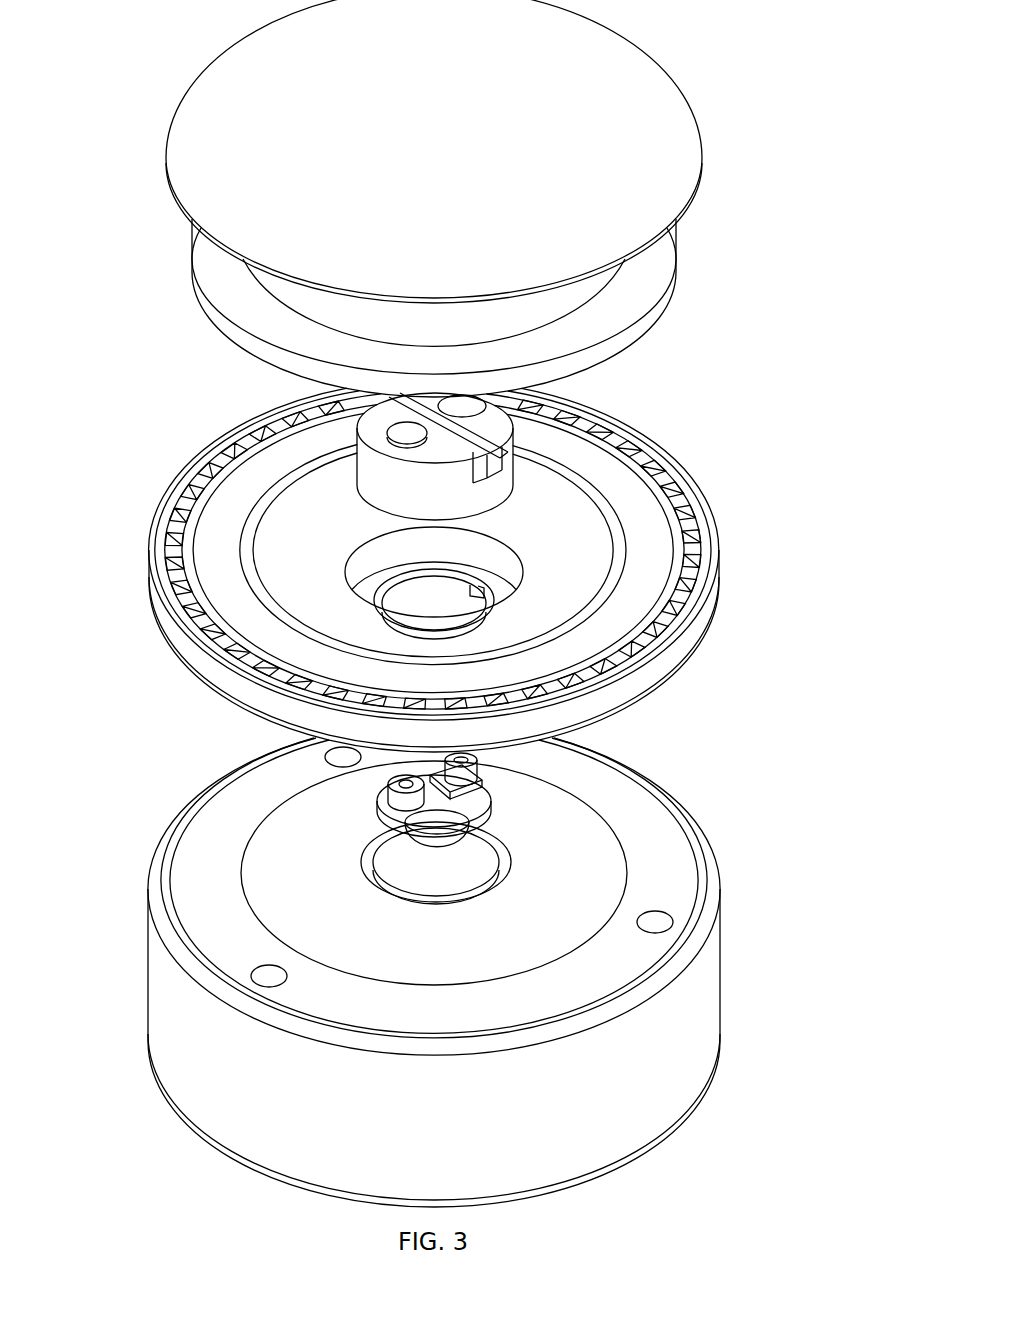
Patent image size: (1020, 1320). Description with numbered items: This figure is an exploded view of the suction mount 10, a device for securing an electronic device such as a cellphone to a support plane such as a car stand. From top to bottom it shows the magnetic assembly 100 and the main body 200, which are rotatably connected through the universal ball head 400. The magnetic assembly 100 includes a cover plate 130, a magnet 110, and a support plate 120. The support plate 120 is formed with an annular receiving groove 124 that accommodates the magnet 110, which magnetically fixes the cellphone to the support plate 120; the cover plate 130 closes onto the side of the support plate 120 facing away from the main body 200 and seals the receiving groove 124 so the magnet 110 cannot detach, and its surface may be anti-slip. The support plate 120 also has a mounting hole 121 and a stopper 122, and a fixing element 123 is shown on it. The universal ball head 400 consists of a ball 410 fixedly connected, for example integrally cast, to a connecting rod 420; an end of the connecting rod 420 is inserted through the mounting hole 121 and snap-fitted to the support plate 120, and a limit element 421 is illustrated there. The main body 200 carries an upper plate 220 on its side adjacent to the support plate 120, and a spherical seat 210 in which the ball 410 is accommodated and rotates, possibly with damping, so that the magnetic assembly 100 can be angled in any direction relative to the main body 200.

The suction mount 10 is at (106, 211).
The magnetic assembly 100 is at (736, 389).
The magnet 110 is at (653, 290).
The support plate 120 is at (473, 570).
The mounting hole 121 is at (460, 624).
The stopper 122 is at (452, 584).
The fixing element 123 is at (388, 487).
The receiving groove 124 is at (656, 523).
The cover plate 130 is at (675, 153).
The main body 200 is at (466, 972).
The spherical seat 210 is at (378, 845).
The upper plate 220 is at (585, 876).
The universal ball head 400 is at (492, 808).
The ball 410 is at (466, 859).
The connecting rod 420 is at (467, 812).
The limit element 421 is at (478, 786).